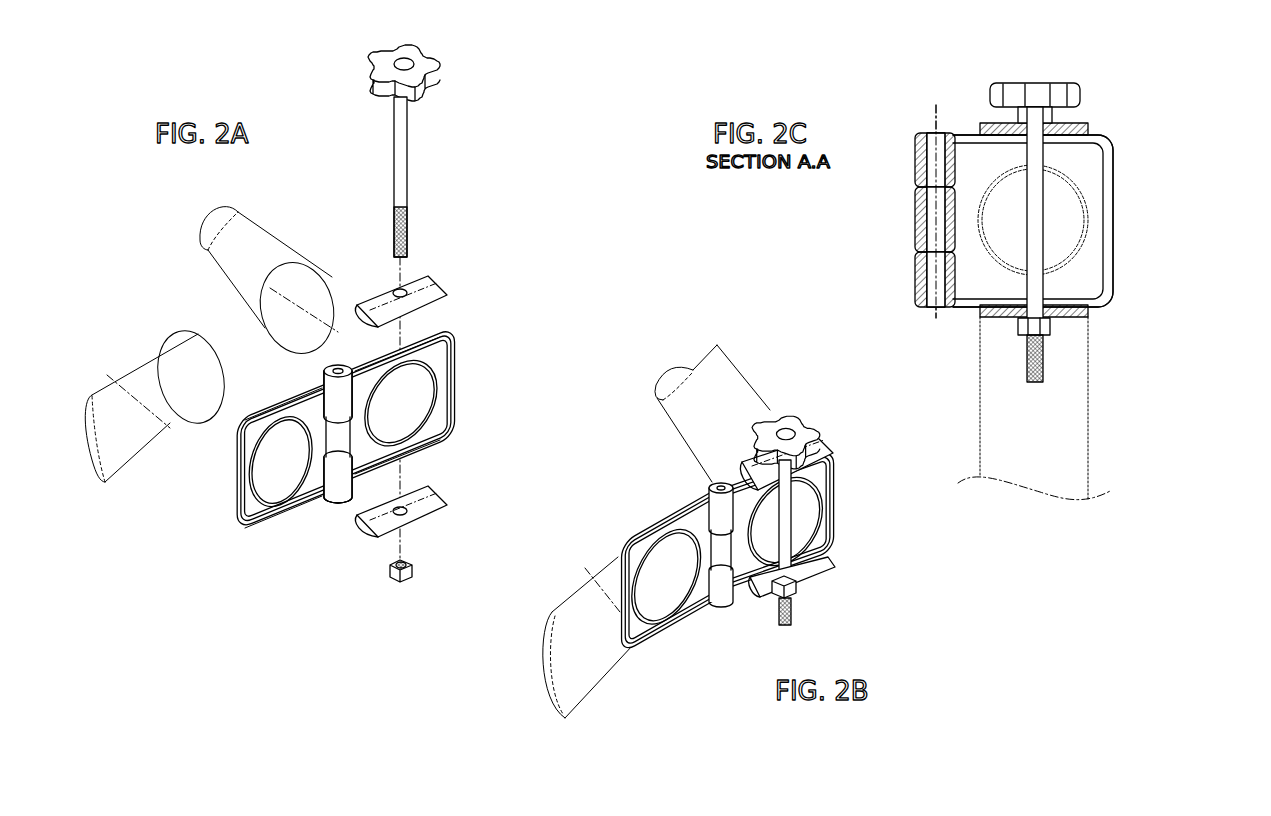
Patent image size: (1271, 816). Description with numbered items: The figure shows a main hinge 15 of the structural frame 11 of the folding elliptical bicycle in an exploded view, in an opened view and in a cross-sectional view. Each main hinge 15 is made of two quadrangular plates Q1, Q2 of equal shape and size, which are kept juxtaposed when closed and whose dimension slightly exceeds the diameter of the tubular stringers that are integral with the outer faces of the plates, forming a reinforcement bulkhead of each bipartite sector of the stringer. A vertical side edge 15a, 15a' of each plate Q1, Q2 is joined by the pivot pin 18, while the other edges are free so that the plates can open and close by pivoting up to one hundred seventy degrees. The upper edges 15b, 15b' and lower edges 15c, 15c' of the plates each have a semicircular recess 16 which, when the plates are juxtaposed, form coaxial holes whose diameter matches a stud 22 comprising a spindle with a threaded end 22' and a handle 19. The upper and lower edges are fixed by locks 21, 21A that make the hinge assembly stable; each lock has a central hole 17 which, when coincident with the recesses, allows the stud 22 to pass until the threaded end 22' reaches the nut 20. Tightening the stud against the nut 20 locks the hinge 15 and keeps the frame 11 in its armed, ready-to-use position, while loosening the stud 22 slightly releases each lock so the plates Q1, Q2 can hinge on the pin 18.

In FIG. 2C, the structural frame 11 is at (1003, 437).
In FIG. 2C, the clamp assembly 15 is at (929, 91).
In FIG. 2A, the vertical side edge 15a is at (312, 392).
In FIG. 2C, the vertical side edge 15a is at (904, 147).
In FIG. 2A, the vertical side edge 15a' is at (330, 505).
In FIG. 2C, the vertical side edge 15a' is at (899, 265).
In FIG. 2A, the upper edge 15b is at (441, 329).
In FIG. 2A, the upper edge 15b' is at (276, 394).
In FIG. 2A, the lower edge 15c is at (426, 457).
In FIG. 2A, the lower edge 15c' is at (247, 531).
In FIG. 2A, the semicircular recess 16 is at (393, 357).
In FIG. 2A, the central hole 17 is at (396, 290).
In FIG. 2B, the pivot pin 18 is at (705, 482).
In FIG. 2C, the pivot pin 18 is at (916, 160).
In FIG. 2A, the handle 19 is at (372, 64).
In FIG. 2B, the handle 19 is at (786, 442).
In FIG. 2C, the handle 19 is at (1001, 84).
In FIG. 2A, the nut 20 is at (406, 585).
In FIG. 2B, the nut 20 is at (808, 592).
In FIG. 2C, the nut 20 is at (1018, 325).
In FIG. 2A, the lock 21 is at (432, 282).
In FIG. 2B, the lock 21 is at (786, 463).
In FIG. 2C, the lock 21 is at (1084, 124).
In FIG. 2A, the lock 21A is at (425, 523).
In FIG. 2B, the lock 21A is at (792, 577).
In FIG. 2C, the lock 21A is at (1090, 314).
In FIG. 2A, the stud 22 is at (470, 296).
In FIG. 2B, the stud 22 is at (813, 459).
In FIG. 2C, the stud 22 is at (1035, 213).
In FIG. 2A, the threaded end 22' is at (452, 225).
In FIG. 2C, the threaded end 22' is at (1086, 368).
In FIG. 2A, the quadrangular plate Q1 is at (458, 360).
In FIG. 2B, the quadrangular plate Q1 is at (838, 489).
In FIG. 2C, the quadrangular plate Q1 is at (1033, 221).
In FIG. 2A, the quadrangular plate Q2 is at (230, 455).
In FIG. 2B, the quadrangular plate Q2 is at (644, 530).